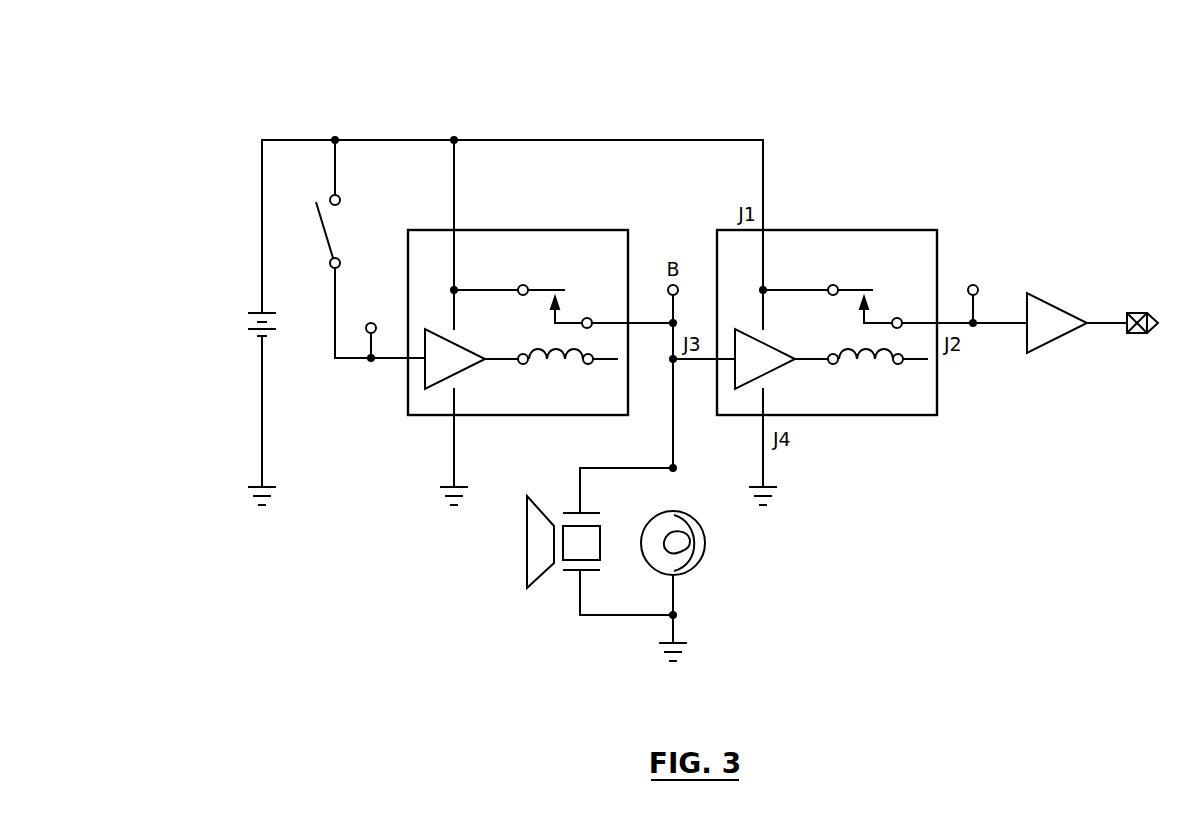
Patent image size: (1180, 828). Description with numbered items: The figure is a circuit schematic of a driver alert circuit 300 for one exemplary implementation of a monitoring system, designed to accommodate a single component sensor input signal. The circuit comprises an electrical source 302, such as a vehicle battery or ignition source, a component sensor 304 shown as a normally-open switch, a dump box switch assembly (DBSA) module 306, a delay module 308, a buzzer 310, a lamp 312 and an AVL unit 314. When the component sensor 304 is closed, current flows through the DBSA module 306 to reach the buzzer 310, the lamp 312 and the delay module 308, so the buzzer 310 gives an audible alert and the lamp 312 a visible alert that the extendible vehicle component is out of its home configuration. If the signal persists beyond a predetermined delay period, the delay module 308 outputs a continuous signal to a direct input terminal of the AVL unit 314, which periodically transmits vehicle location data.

The driver alert circuit 300 is at (229, 116).
The electrical source 302 is at (238, 325).
The component sensor 304 is at (294, 232).
The dump box switch assembly (DBSA) module 306 is at (600, 231).
The delay module 308 is at (938, 250).
The buzzer 310 is at (524, 603).
The lamp 312 is at (696, 566).
The AVL unit 314 is at (1054, 346).